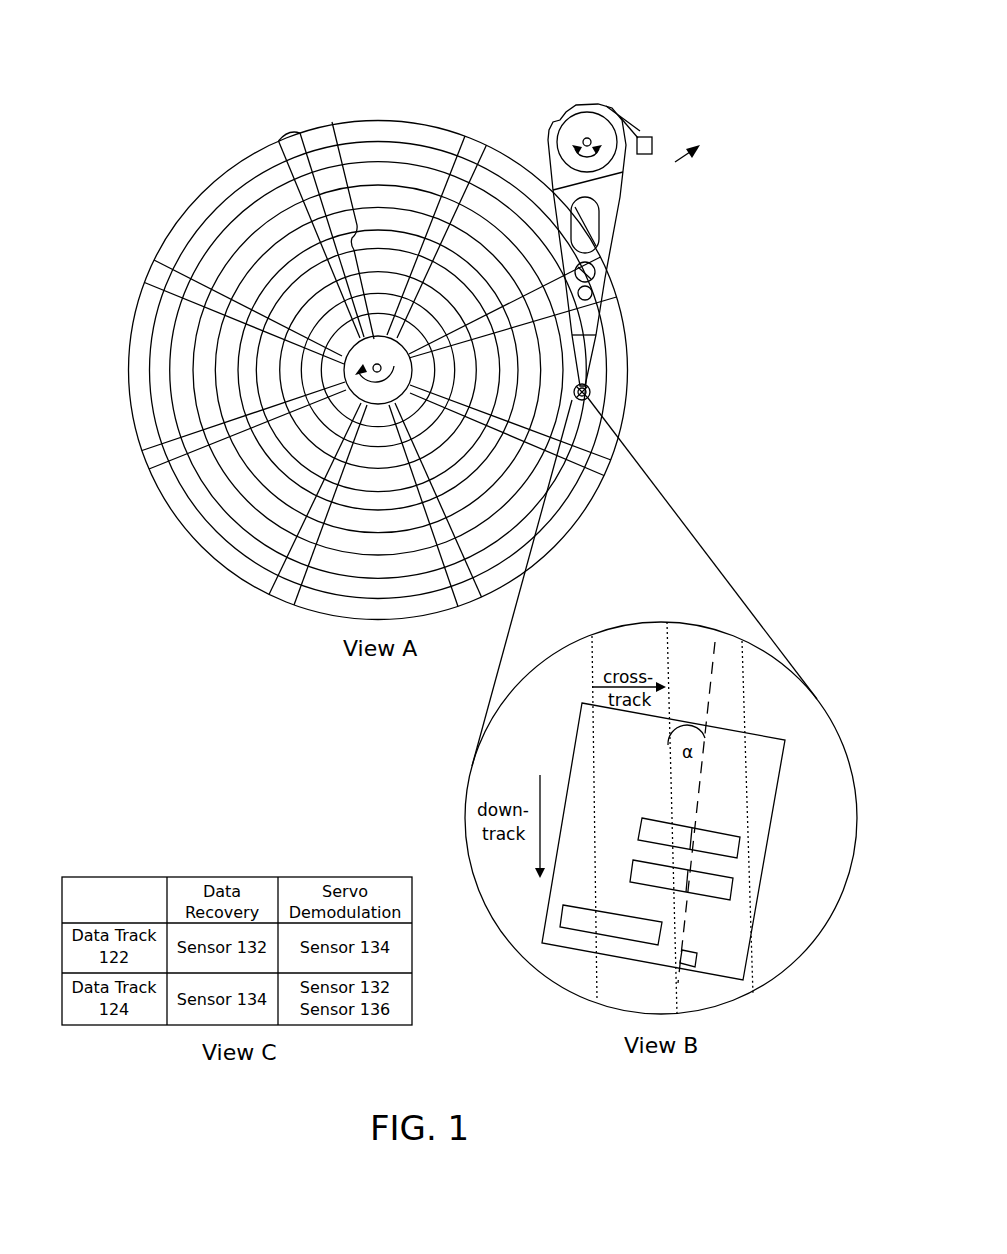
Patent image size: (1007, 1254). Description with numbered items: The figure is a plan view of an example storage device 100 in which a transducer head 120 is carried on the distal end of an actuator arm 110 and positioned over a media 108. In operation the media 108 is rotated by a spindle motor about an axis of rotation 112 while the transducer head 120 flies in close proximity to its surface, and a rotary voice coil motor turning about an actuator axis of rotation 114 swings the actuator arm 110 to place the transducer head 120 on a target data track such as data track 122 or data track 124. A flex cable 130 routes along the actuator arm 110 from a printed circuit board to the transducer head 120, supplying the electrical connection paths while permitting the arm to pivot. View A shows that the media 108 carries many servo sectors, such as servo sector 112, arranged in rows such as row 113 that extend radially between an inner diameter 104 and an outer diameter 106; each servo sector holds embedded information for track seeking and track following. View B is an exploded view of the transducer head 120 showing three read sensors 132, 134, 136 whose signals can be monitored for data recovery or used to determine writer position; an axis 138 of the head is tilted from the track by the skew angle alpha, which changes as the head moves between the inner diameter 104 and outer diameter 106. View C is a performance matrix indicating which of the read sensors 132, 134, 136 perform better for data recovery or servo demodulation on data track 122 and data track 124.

The storage device 100 is at (144, 95).
The inner diameter 104 is at (131, 323).
The outer diameter 106 is at (129, 392).
The media 108 is at (198, 192).
The actuator arm 110 is at (620, 200).
The servo sector 112 is at (277, 130).
The row 113 is at (332, 122).
The actuator axis of rotation 114 is at (587, 142).
The transducer head 120 is at (596, 391).
The data track 122 is at (310, 587).
The data track 124 is at (333, 613).
The flex cable 130 is at (653, 152).
The read sensor 132 is at (560, 913).
The read sensor 134 is at (740, 848).
The read sensor 136 is at (733, 893).
The axis 138 is at (716, 678).